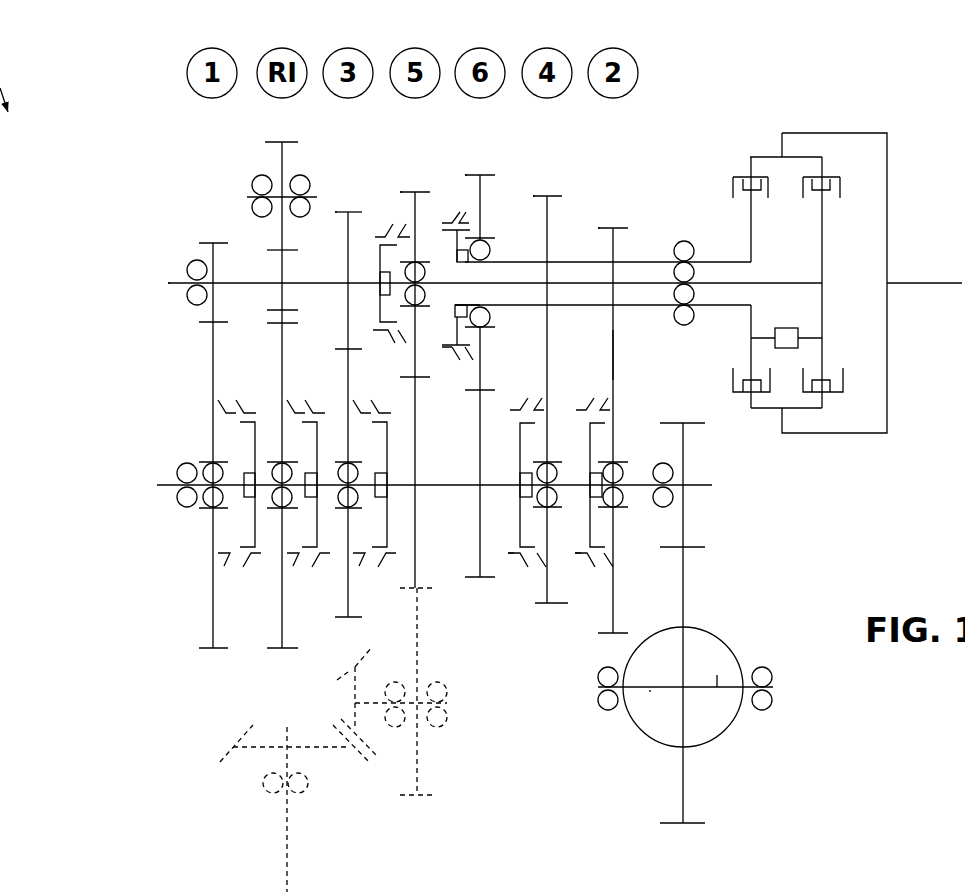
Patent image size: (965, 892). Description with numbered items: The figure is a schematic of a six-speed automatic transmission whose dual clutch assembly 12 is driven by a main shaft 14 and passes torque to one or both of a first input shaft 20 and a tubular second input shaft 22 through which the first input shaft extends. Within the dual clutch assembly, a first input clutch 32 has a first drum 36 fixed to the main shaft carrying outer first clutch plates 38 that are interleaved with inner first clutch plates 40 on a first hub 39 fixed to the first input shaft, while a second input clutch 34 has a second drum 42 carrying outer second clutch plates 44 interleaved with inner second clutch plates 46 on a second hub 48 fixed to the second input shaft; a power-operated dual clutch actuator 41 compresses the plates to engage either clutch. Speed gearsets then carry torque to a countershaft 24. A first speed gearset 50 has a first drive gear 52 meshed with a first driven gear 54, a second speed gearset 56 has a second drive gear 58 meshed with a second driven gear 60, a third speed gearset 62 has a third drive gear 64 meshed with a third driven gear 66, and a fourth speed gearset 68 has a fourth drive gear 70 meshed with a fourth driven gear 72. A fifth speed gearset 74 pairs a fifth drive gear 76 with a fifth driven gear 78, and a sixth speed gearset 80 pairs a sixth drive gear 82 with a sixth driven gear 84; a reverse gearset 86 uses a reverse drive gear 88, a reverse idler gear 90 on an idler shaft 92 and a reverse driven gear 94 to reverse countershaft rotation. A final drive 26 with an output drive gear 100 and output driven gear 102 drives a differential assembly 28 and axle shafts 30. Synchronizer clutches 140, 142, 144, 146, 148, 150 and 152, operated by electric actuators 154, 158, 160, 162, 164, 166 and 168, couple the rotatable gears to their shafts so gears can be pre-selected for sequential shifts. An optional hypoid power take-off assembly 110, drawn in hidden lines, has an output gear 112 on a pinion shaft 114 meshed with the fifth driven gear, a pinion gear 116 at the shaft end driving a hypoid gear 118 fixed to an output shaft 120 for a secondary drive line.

The dual clutch assembly 12 is at (833, 128).
The main shaft 14 is at (917, 283).
The first input shaft 20 is at (806, 283).
The second input shaft 22 is at (722, 262).
The countershaft 24 is at (440, 487).
The final drive 26 is at (714, 531).
The differential assembly 28 is at (749, 748).
The axle shafts 30 is at (717, 687).
The first input clutch 32 is at (858, 182).
The second input clutch 34 is at (723, 165).
The first drum 36 is at (836, 172).
The outer first clutch plates 38 is at (842, 196).
The first hub 39 is at (822, 262).
The inner first clutch plates 40 is at (812, 199).
The dual clutch actuator 41 is at (806, 301).
The second drum 42 is at (736, 177).
The outer second clutch plates 44 is at (733, 186).
The inner second clutch plates 46 is at (768, 198).
The second hub 48 is at (751, 213).
The first speed gearset 50 is at (167, 183).
The first drive gear 52 is at (213, 318).
The first driven gear 54 is at (213, 362).
The second speed gearset 56 is at (604, 207).
The second drive gear 58 is at (613, 250).
The second driven gear 60 is at (614, 354).
The third speed gearset 62 is at (343, 198).
The third drive gear 64 is at (348, 248).
The third driven gear 66 is at (348, 370).
The fourth speed gearset 68 is at (540, 183).
The fourth drive gear 70 is at (547, 233).
The fourth driven gear 72 is at (568, 596).
The fifth speed gearset 74 is at (409, 172).
The fifth drive gear 76 is at (413, 207).
The fifth driven gear 78 is at (417, 415).
The sixth speed gearset 80 is at (474, 170).
The sixth drive gear 82 is at (481, 195).
The sixth driven gear 84 is at (480, 453).
The reverse gearset 86 is at (276, 135).
The reverse drive gear 88 is at (281, 270).
The reverse idler gear 90 is at (282, 157).
The idler shaft 92 is at (250, 200).
The reverse driven gear 94 is at (282, 355).
The output drive gear 100 is at (683, 443).
The output driven gear 102 is at (683, 578).
The hypoid power take-off assembly 110 is at (155, 705).
The output gear 112 is at (419, 636).
The pinion shaft 114 is at (447, 703).
The pinion gear 116 is at (350, 672).
The hypoid gear 118 is at (220, 758).
The output shaft 120 is at (287, 836).
The first synchronizer clutch 140 is at (245, 566).
The second synchronizer clutch 142 is at (586, 566).
The third synchronizer clutch 144 is at (383, 566).
The fourth synchronizer clutch 146 is at (518, 566).
The fifth synchronizer clutch 148 is at (382, 338).
The sixth synchronizer clutch 150 is at (448, 218).
The seventh synchronizer clutch 152 is at (312, 566).
The first electric actuator 154 is at (245, 472).
The second electric actuator 158 is at (592, 472).
The third electric actuator 160 is at (377, 472).
The fourth electric actuator 162 is at (522, 472).
The fifth electric actuator 164 is at (380, 268).
The sixth electric actuator 166 is at (460, 259).
The seventh electric actuator 168 is at (308, 472).